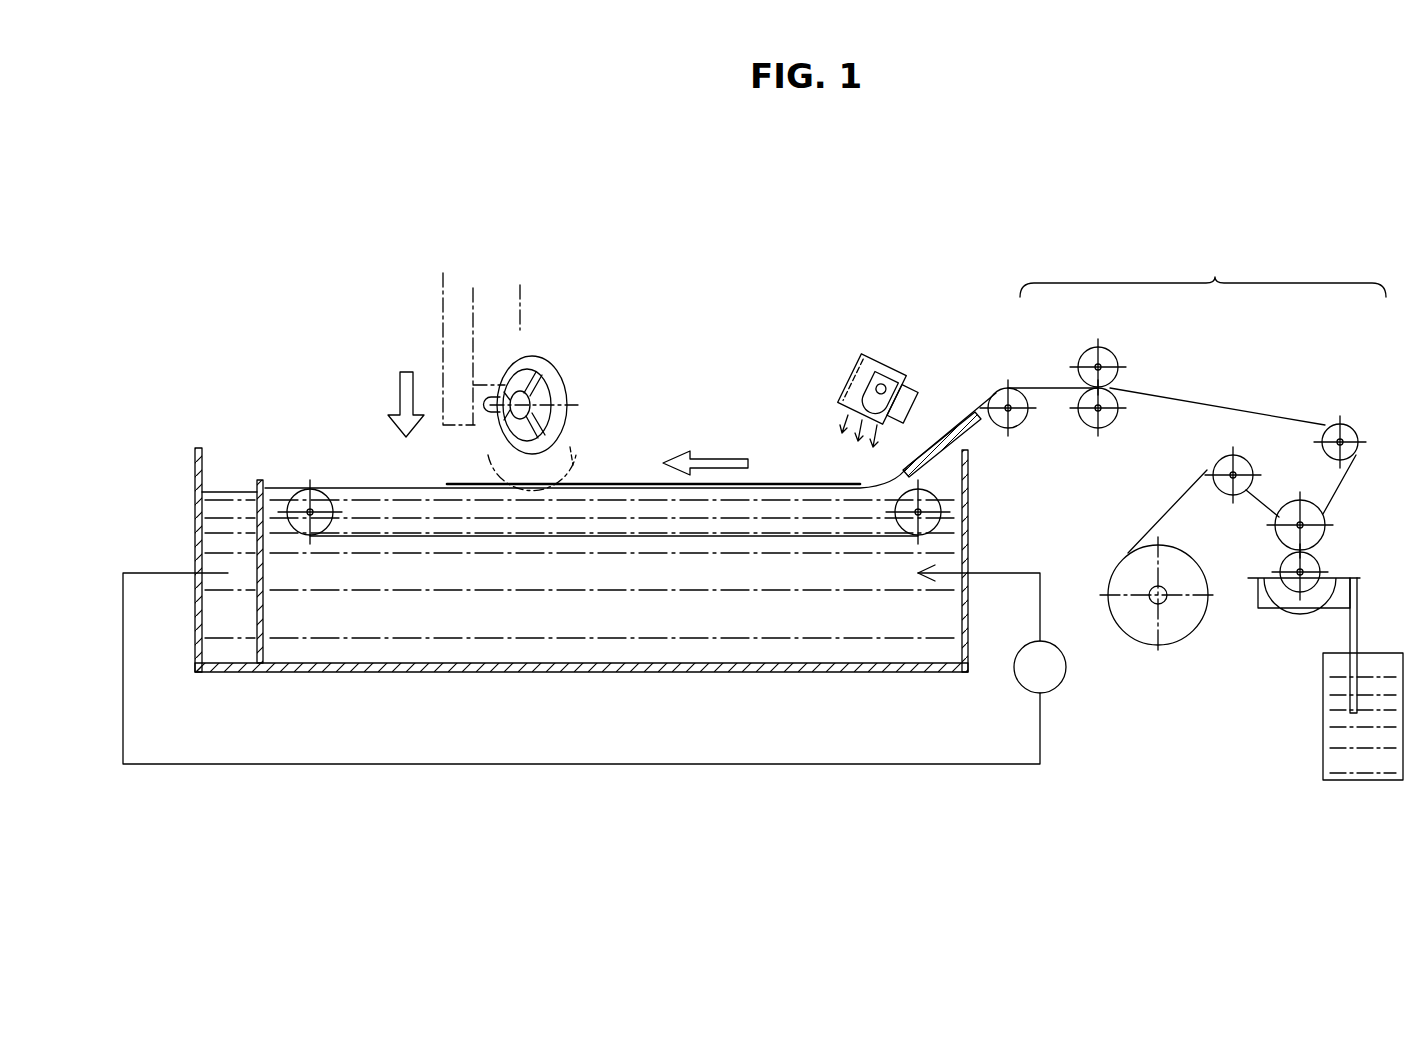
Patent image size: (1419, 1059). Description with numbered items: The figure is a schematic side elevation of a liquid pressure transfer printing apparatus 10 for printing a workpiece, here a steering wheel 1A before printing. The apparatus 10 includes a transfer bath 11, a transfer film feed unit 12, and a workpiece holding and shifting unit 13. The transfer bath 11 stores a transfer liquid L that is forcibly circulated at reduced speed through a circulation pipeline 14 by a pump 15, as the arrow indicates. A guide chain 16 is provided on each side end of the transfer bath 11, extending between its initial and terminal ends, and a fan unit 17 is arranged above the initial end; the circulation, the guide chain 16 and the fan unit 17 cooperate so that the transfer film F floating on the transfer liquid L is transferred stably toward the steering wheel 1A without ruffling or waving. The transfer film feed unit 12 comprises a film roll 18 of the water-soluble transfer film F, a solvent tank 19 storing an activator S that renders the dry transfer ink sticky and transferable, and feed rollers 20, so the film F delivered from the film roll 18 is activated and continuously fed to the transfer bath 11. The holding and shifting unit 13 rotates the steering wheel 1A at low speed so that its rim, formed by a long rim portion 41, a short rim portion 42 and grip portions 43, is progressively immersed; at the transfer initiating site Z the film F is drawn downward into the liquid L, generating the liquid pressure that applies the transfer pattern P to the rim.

The liquid pressure transfer printing apparatus 10 is at (273, 227).
The transfer bath 11 is at (816, 673).
The transfer film feed unit 12 is at (1144, 360).
The workpiece holding and shifting unit 13 is at (455, 345).
The circulation pipeline 14 is at (566, 770).
The pump 15 is at (1058, 677).
The guide chain 16 is at (801, 530).
The fan unit 17 is at (865, 391).
The film roll 18 is at (1185, 628).
The solvent tank 19 is at (1356, 595).
The feed rollers 20 is at (1093, 358).
The long rim portion 41 is at (560, 383).
The short rim portion 42 is at (501, 420).
The grip portion 43 is at (520, 363).
The steering wheel before printing 1A is at (538, 360).
The transfer liquid L is at (636, 632).
The transfer pattern P is at (1180, 393).
The transfer film F is at (1270, 415).
The activator S is at (1333, 733).
The transfer initiating site Z is at (574, 470).